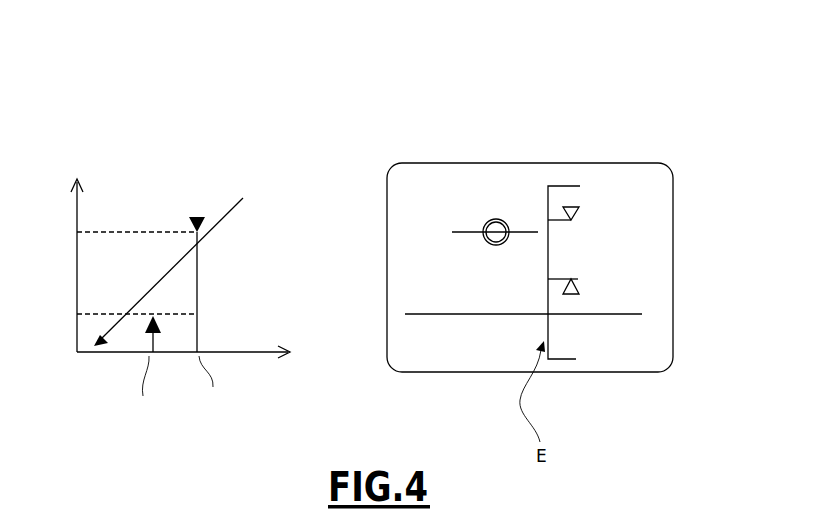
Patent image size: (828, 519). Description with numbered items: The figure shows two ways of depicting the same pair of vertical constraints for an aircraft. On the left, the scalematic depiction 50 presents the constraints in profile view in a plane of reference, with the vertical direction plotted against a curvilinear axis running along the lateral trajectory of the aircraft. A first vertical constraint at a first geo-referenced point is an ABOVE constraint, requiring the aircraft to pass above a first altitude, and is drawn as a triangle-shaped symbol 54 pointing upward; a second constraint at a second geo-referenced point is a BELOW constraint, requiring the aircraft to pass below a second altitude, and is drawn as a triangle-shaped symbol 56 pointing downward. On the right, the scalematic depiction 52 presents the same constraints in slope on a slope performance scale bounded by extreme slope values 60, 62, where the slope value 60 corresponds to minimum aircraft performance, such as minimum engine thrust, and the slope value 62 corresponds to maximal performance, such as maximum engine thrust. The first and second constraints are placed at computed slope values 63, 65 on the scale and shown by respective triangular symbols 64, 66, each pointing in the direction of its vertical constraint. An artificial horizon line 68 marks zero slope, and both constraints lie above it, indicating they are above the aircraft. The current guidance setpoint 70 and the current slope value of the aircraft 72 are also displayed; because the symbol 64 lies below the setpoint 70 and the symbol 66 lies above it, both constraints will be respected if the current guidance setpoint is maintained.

The scalematic depiction 50 is at (150, 122).
The scalematic depiction 52 is at (624, 148).
The triangle-shaped symbol 54 is at (162, 328).
The triangle-shaped symbol 56 is at (201, 213).
The extreme slope value 60 is at (576, 359).
The extreme slope value 62 is at (574, 186).
The slope value 63 is at (548, 280).
The triangular symbol 64 is at (578, 279).
The slope value 65 is at (548, 220).
The triangular symbol 66 is at (575, 222).
The artificial horizon line 68 is at (484, 326).
The current guidance setpoint 70 is at (491, 212).
The current slope value of the aircraft 72 is at (464, 220).